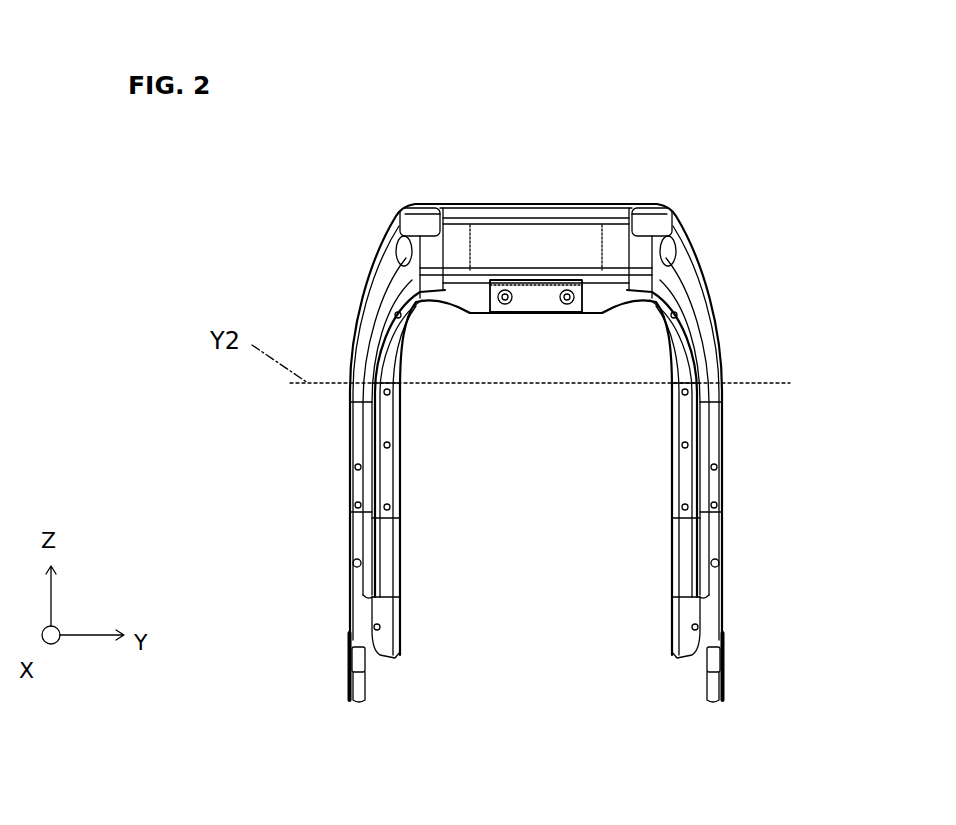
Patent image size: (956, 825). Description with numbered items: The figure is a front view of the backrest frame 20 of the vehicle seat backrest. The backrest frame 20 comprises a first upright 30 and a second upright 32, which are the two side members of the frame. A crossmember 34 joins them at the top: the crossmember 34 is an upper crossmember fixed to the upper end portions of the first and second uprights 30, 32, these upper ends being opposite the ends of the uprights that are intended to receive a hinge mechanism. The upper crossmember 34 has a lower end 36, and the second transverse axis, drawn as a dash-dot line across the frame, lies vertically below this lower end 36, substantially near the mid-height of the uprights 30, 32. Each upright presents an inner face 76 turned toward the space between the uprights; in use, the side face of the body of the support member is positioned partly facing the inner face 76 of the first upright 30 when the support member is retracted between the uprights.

The backrest frame 20 is at (273, 211).
The first upright 30 is at (365, 597).
The second upright 32 is at (716, 599).
The crossmember 34 is at (497, 237).
The lower end 36 is at (512, 314).
The inner face 76 is at (388, 463).